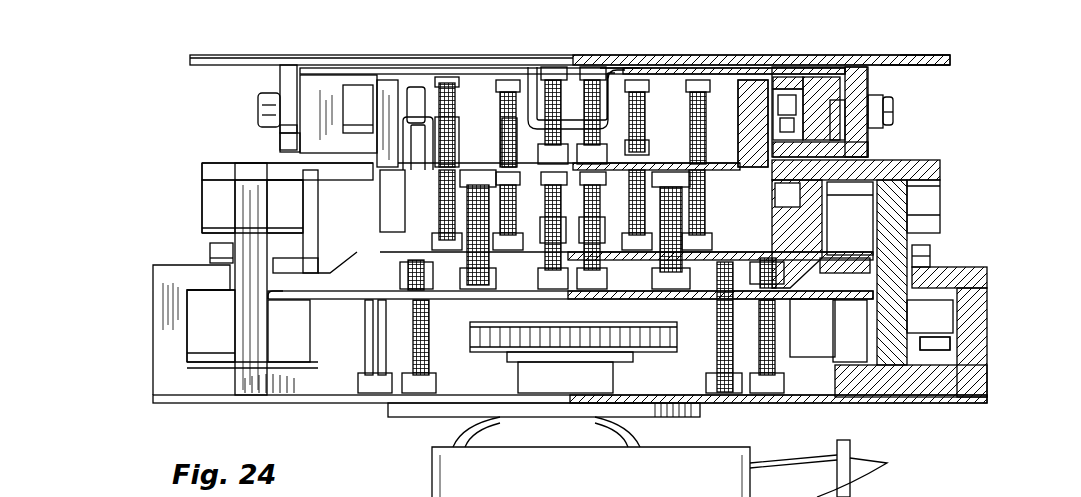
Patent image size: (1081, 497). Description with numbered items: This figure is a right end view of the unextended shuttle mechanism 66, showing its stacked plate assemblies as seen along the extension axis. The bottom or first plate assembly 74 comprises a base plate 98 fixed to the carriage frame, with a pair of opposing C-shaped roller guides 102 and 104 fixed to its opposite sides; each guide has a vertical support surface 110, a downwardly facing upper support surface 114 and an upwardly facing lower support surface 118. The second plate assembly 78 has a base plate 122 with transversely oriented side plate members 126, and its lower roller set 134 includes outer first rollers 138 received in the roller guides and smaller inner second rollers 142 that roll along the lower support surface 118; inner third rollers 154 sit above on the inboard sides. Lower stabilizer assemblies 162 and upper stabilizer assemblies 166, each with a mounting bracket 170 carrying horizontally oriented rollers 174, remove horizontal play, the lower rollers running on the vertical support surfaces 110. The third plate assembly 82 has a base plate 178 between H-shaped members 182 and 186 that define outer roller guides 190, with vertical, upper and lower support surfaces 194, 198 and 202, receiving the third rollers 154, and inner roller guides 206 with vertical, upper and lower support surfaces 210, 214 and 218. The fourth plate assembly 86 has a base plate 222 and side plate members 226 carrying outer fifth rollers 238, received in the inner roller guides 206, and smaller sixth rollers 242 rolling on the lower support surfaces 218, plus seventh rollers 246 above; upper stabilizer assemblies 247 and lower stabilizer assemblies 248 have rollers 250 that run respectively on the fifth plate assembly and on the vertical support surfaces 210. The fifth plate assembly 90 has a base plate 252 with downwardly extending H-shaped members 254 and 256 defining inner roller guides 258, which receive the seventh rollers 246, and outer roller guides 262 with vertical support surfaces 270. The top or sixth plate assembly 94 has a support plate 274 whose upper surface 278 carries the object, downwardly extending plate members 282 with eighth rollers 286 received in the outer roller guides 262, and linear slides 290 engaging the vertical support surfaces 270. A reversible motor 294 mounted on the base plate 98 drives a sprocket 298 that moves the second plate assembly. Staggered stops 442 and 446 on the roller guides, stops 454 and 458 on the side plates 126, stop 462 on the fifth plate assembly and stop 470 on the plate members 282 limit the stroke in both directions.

The shuttle mechanism 66 is at (1022, 108).
The first plate assembly 74 is at (166, 405).
The second plate assembly 78 is at (198, 230).
The third plate assembly 82 is at (198, 160).
The fourth plate assembly 86 is at (388, 86).
The fifth plate assembly 90 is at (620, 64).
The sixth plate assembly 94 is at (955, 54).
The base plate 98 is at (243, 398).
The roller guide 102 is at (990, 308).
The roller guide 104 is at (156, 315).
The vertical support surface 110 is at (188, 337).
The upper support surface 114 is at (203, 297).
The lower support surface 118 is at (193, 352).
The base plate 122 is at (611, 295).
The side plate members 126 is at (253, 358).
The lower roller set 134 is at (315, 362).
The first rollers 138 is at (230, 210).
The second rollers 142 is at (293, 343).
The third rollers 154 is at (312, 183).
The lower stabilizer assemblies 162 is at (918, 352).
The upper stabilizer assemblies 166 is at (768, 146).
The mounting bracket 170 is at (955, 347).
The rollers 174 is at (912, 196).
The base plate 178 is at (615, 242).
The H-shaped member 182 is at (198, 172).
The H-shaped member 186 is at (948, 170).
The outer roller guide 190 is at (290, 268).
The vertical support surface 194 is at (818, 292).
The upper support surface 198 is at (265, 188).
The lower support surface 202 is at (307, 250).
The inner roller guide 206 is at (410, 242).
The vertical support surface 210 is at (780, 226).
The upper support surface 214 is at (269, 279).
The lower support surface 218 is at (383, 226).
The base plate 222 is at (678, 147).
The side plate members 226 is at (412, 90).
The fifth rollers 238 is at (502, 112).
The sixth rollers 242 is at (372, 170).
The seventh rollers 246 is at (358, 90).
The upper stabilizer assemblies 247 is at (806, 88).
The lower stabilizer assemblies 248 is at (717, 300).
The rollers 250 is at (833, 90).
The base plate 252 is at (503, 78).
The H-shaped members 254 is at (795, 80).
The H-shaped member 256 is at (340, 70).
The inner roller guide 258 is at (770, 75).
The outer roller guide 262 is at (290, 95).
The vertical support surface 270 is at (885, 103).
The support plate 274 is at (955, 64).
The upper surface 278 is at (932, 58).
The plate members 282 is at (856, 83).
The eighth rollers 286 is at (300, 97).
The linear slides 290 is at (885, 114).
The motor 294 is at (432, 474).
The sprocket 298 is at (500, 353).
The stop 442 is at (212, 258).
The stop 446 is at (932, 257).
The stop 454 is at (210, 246).
The stop 458 is at (932, 248).
The stop 462 is at (297, 147).
The stop 470 is at (288, 130).